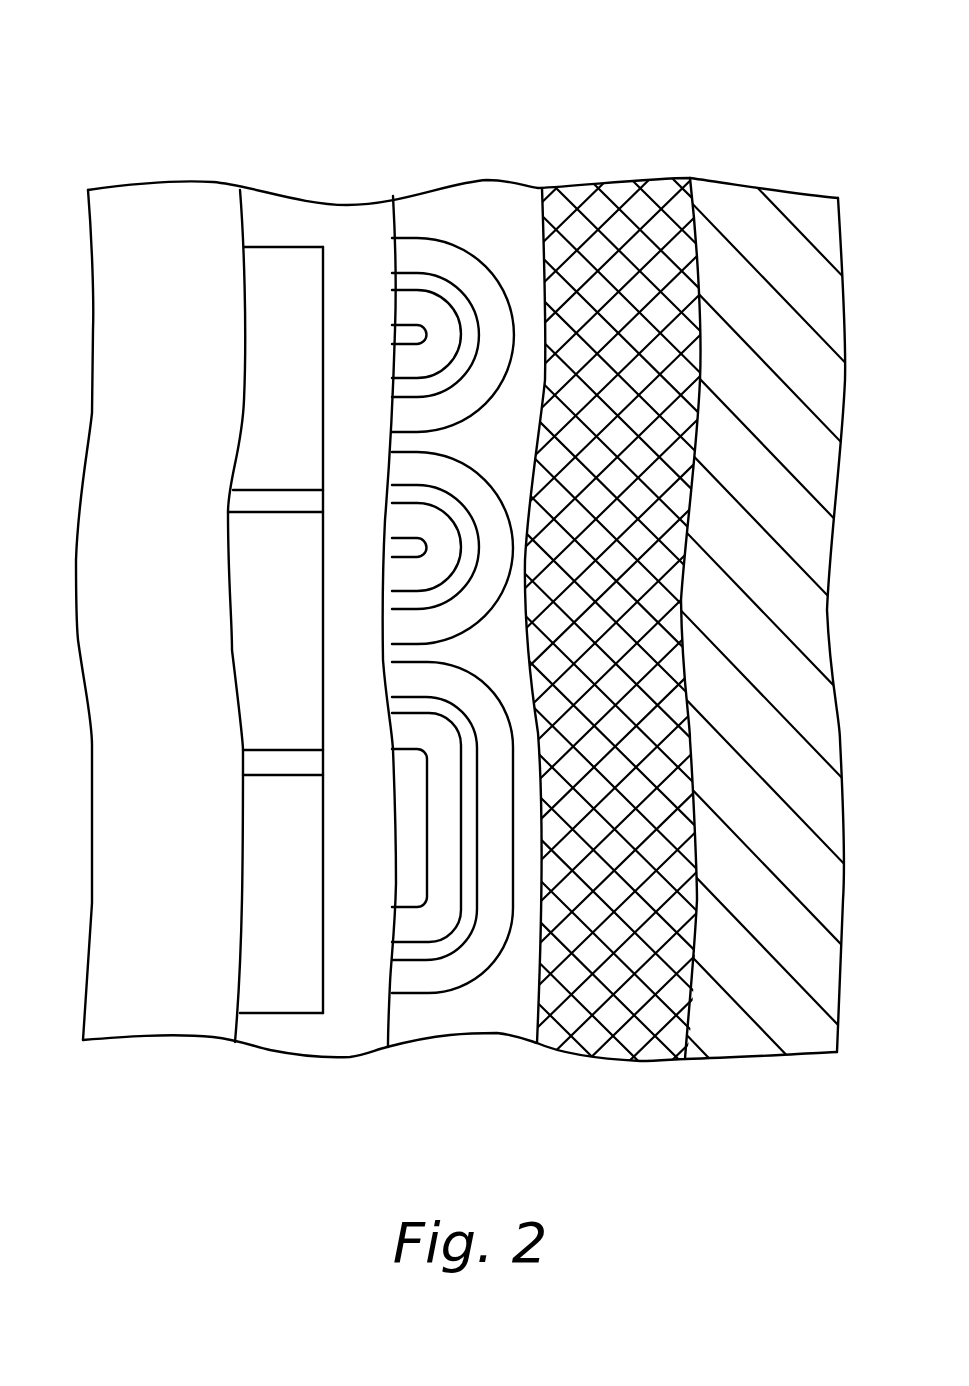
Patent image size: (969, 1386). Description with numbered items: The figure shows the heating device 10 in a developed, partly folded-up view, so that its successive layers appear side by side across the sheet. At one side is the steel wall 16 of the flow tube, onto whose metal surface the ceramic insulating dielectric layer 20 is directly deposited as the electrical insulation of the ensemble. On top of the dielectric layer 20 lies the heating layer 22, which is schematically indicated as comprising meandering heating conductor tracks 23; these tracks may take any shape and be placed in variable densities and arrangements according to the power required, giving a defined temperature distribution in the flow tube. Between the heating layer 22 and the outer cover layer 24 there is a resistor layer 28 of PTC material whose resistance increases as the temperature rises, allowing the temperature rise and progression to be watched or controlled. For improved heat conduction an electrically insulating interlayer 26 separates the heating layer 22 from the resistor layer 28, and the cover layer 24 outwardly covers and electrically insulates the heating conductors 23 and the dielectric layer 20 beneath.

The heating device 10 is at (458, 86).
The wall 16 is at (773, 222).
The insulating dielectric layer 20 is at (635, 212).
The heating layer 22 is at (488, 243).
The heating conductor tracks 23 is at (415, 303).
The cover layer 24 is at (164, 205).
The interlayer 26 is at (326, 226).
The resistor layer 28 is at (266, 280).